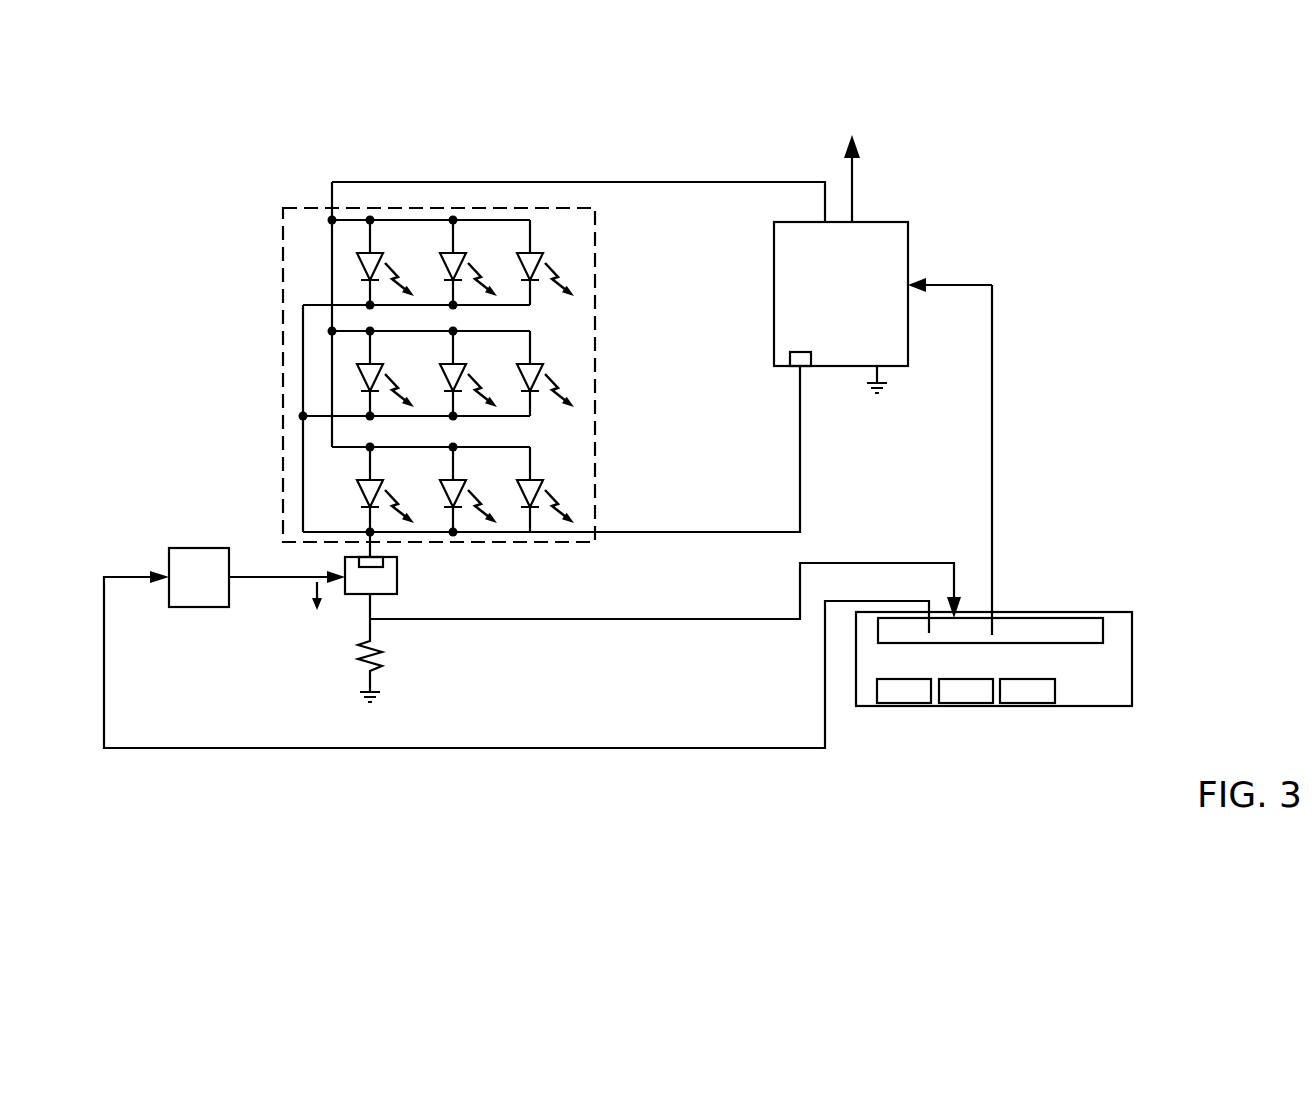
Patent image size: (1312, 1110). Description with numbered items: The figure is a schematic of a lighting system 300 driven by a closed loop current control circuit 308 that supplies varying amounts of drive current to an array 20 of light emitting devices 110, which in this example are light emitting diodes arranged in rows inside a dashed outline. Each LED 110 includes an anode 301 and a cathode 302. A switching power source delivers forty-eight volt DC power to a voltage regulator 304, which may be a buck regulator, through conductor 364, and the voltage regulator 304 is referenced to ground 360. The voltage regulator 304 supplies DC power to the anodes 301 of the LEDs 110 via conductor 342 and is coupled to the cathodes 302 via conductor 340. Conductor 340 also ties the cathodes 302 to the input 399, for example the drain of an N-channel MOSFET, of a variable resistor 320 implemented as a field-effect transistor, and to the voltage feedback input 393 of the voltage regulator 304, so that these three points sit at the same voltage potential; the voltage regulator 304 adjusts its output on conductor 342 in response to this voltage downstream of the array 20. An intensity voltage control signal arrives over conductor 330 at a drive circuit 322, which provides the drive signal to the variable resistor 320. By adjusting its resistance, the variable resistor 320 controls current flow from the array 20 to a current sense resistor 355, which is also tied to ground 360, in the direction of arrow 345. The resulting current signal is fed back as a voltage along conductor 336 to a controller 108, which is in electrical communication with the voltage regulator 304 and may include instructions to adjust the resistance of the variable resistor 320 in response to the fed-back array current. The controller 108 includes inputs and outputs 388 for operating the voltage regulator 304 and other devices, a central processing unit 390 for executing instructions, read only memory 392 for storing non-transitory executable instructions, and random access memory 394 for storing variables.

The lighting system 300 is at (268, 212).
The light emitting device 110 is at (383, 261).
The anode 301 is at (368, 270).
The cathode 302 is at (368, 280).
The array 20 is at (550, 304).
The conductor 342 is at (585, 182).
The conductor 364 is at (853, 192).
The voltage regulator 304 is at (883, 428).
The voltage feedback input 393 is at (800, 358).
The ground 360 is at (880, 390).
The conductor 340 is at (800, 522).
The drive circuit 322 is at (200, 548).
The conductor 330 is at (105, 576).
The arrow 345 is at (312, 587).
The variable resistor 320 is at (400, 592).
The input 399 is at (368, 562).
The current sense resistor 355 is at (380, 668).
The conductor 336 is at (430, 621).
The closed loop current control circuit 308 is at (675, 563).
The controller 108 is at (994, 659).
The inputs and outputs 388 is at (990, 630).
The central processing unit 390 is at (904, 691).
The read only memory 392 is at (966, 691).
The random access memory 394 is at (1027, 691).